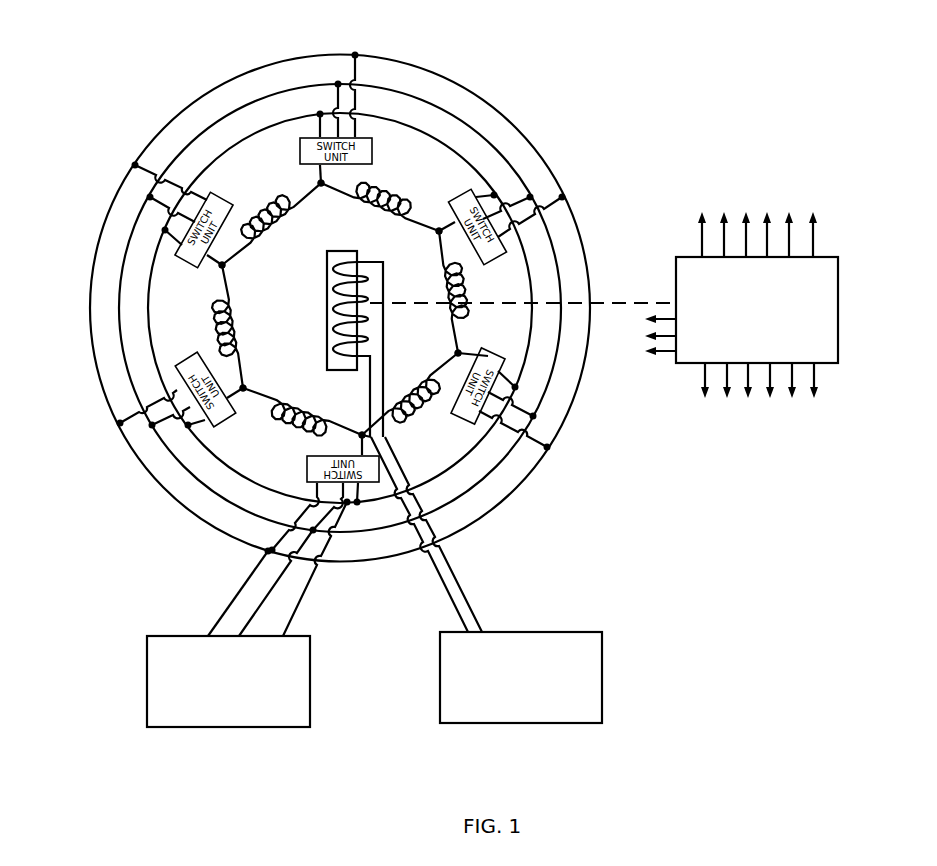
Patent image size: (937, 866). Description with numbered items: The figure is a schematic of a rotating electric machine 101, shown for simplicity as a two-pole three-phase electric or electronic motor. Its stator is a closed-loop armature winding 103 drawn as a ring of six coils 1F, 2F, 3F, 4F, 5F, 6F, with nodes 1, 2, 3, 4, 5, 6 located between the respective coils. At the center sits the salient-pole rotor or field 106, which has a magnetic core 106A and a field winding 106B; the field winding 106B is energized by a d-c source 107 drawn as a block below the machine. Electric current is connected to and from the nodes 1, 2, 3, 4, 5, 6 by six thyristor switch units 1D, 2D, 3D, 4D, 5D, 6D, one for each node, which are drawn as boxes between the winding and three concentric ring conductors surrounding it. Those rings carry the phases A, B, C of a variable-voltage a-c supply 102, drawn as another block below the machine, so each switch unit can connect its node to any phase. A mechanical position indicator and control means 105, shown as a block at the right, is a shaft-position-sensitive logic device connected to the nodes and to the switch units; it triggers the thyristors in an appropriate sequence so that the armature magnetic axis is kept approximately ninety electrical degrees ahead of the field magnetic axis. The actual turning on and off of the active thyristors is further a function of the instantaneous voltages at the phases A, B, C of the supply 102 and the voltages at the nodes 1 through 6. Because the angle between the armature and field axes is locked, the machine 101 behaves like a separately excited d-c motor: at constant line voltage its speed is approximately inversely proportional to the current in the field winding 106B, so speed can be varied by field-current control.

The rotating electric machine 101 is at (544, 98).
The variable-voltage a-c supply 102 is at (258, 727).
The armature winding 103 is at (265, 426).
The mechanical position indicator and control means 105 is at (676, 257).
The salient-pole rotor or field 106 is at (385, 239).
The magnetic core 106A is at (320, 301).
The field winding 106B is at (312, 303).
The d-c source 107 is at (582, 723).
The node 1 is at (321, 192).
The node 2 is at (436, 242).
The node 3 is at (456, 351).
The node 4 is at (361, 424).
The node 5 is at (257, 378).
The node 6 is at (226, 266).
The thyristor switch unit 1D is at (301, 152).
The thyristor switch unit 2D is at (470, 197).
The thyristor switch unit 3D is at (500, 372).
The thyristor switch unit 4D is at (308, 468).
The thyristor switch unit 5D is at (197, 352).
The thyristor switch unit 6D is at (176, 258).
The armature coil 1F is at (378, 198).
The armature coil 2F is at (480, 282).
The armature coil 3F is at (408, 432).
The armature coil 4F is at (307, 426).
The armature coil 5F is at (207, 298).
The armature coil 6F is at (277, 187).
The phase A of a-c supply A is at (247, 583).
The phase B of a-c supply B is at (258, 610).
The phase C of a-c supply C is at (300, 600).